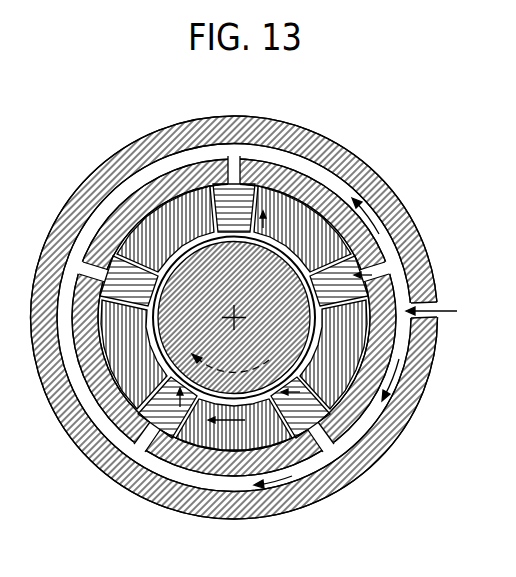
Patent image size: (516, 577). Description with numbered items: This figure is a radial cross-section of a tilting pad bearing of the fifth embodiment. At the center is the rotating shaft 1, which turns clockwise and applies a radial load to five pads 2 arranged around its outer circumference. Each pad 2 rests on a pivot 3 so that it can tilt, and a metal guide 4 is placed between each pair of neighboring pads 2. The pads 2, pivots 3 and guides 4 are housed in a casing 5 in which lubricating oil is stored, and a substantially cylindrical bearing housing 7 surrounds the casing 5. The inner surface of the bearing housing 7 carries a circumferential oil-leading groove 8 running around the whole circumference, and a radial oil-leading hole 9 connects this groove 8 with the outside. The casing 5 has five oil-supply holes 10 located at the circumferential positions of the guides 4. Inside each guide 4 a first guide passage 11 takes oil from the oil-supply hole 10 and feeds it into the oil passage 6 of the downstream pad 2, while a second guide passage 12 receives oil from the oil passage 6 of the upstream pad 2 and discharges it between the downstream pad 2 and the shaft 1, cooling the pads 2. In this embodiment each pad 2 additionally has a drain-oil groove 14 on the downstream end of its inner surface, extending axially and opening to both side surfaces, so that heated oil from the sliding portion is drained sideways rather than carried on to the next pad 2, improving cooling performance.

The rotating shaft 1 is at (250, 268).
The pad 2 is at (187, 200).
The pivot 3 is at (155, 205).
The guide 4 is at (105, 253).
The casing 5 is at (327, 192).
The oil passage 6 is at (199, 446).
The bearing housing 7 is at (392, 190).
The circumferential oil-leading groove 8 is at (392, 253).
The radial oil-leading hole 9 is at (438, 347).
The oil-supply hole 10 is at (330, 433).
The first guide passage 11 is at (312, 452).
The second guide passage 12 is at (380, 457).
The drain-oil groove 14 is at (176, 448).